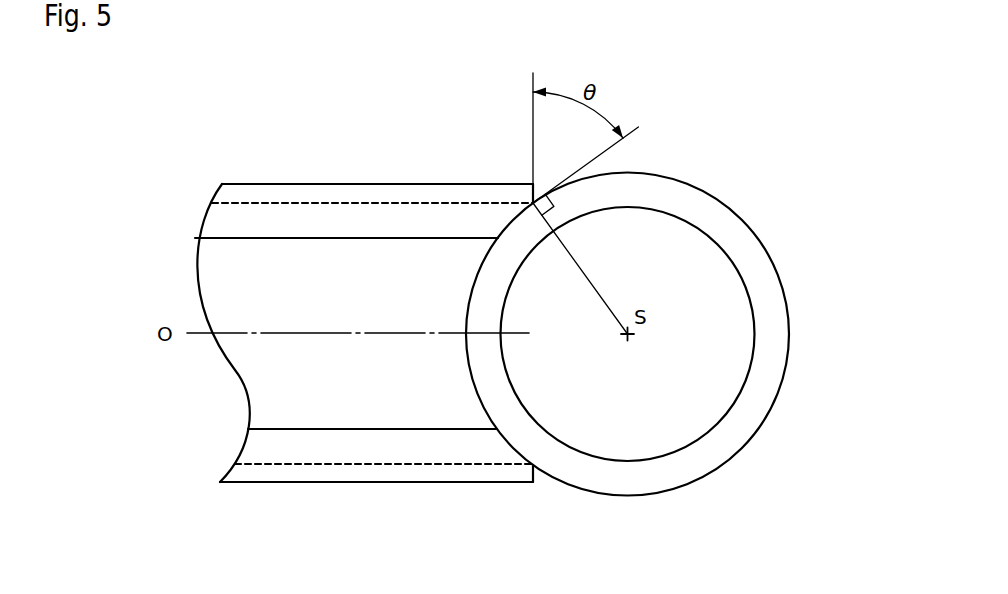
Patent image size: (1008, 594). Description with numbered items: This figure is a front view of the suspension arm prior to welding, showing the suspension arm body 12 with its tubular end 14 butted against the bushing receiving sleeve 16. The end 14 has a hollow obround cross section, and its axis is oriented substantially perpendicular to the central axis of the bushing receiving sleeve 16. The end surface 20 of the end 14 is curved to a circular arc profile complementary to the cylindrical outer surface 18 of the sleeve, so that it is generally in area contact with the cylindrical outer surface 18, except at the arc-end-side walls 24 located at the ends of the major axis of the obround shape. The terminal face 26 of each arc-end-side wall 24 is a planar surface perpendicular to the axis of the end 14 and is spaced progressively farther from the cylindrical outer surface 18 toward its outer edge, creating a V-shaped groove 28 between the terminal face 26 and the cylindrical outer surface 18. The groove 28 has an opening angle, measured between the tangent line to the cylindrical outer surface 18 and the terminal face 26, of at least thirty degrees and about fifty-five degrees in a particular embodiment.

The suspension arm body 12 is at (240, 508).
The end 14 is at (312, 255).
The bushing receiving sleeve 16 is at (649, 325).
The cylindrical outer surface 18 is at (695, 182).
The end surface 20 is at (475, 373).
The arc-end-side wall 24 is at (482, 197).
The terminal face 26 is at (542, 187).
The V-shaped groove 28 is at (554, 173).